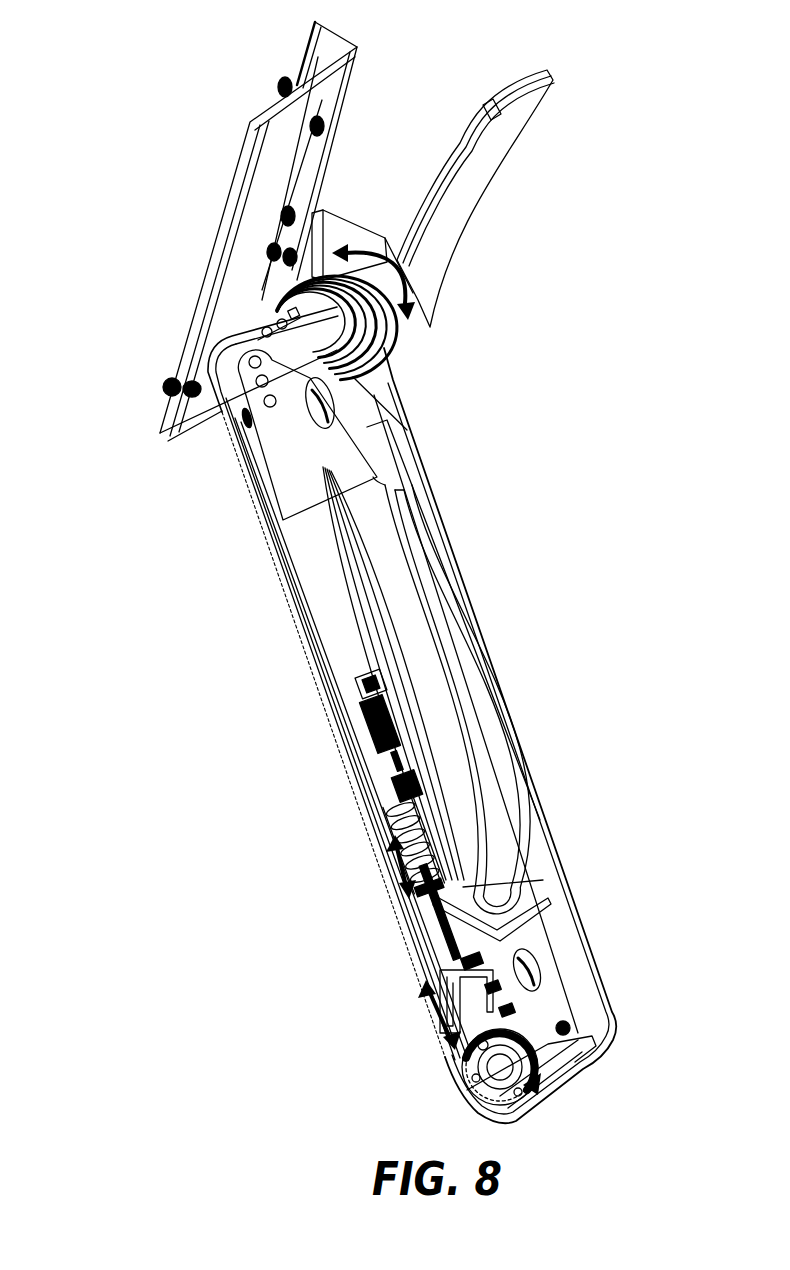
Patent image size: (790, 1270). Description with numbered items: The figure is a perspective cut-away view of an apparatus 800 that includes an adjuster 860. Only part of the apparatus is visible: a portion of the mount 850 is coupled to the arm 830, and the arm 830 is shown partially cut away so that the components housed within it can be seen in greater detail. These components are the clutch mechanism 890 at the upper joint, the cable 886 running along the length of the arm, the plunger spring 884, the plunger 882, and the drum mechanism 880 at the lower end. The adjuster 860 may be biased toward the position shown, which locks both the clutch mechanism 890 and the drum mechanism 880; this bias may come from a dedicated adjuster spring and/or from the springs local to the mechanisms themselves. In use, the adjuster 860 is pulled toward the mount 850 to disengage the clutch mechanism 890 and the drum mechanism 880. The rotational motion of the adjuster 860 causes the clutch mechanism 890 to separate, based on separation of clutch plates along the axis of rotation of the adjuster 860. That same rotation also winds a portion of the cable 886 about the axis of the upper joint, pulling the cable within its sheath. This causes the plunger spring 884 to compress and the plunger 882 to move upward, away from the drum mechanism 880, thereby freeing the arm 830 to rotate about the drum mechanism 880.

The apparatus 800 is at (170, 57).
The arm 830 is at (465, 600).
The mount 850 is at (332, 97).
The adjuster 860 is at (543, 70).
The drum mechanism 880 is at (465, 1083).
The plunger 882 is at (477, 1003).
The plunger spring 884 is at (397, 878).
The cable 886 is at (487, 783).
The clutch mechanism 890 is at (368, 362).